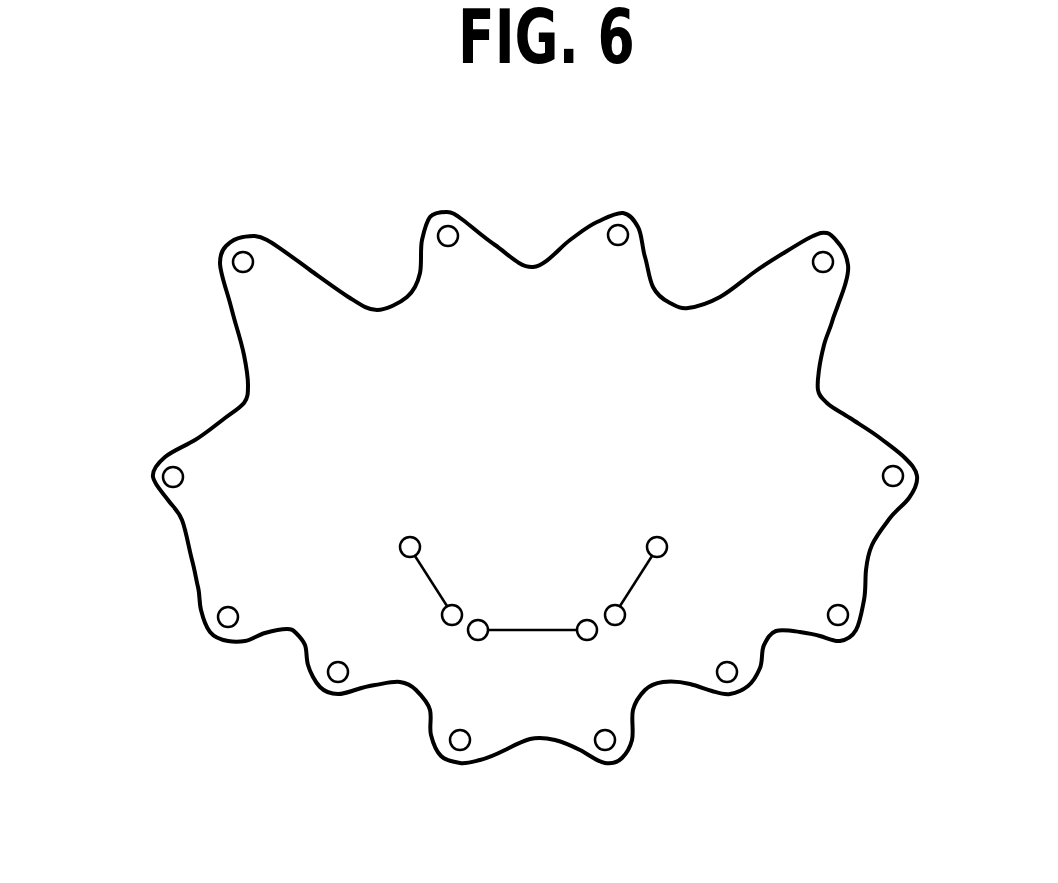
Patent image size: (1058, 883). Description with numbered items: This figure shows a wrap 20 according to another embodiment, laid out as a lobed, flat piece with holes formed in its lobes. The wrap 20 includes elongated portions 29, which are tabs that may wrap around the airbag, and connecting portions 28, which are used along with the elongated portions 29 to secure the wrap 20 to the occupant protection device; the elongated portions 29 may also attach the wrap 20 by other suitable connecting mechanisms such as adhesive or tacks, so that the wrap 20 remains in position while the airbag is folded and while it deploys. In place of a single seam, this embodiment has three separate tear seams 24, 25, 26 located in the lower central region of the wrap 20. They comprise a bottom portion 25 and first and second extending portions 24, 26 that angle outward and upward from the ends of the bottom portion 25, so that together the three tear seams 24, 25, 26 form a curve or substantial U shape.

The wrap 20 is at (843, 293).
The first extending portion tear seam 24 is at (646, 576).
The bottom portion tear seam 25 is at (540, 636).
The second extending portion tear seam 26 is at (430, 585).
The connecting portions 28 is at (616, 234).
The elongated portions 29 is at (153, 464).